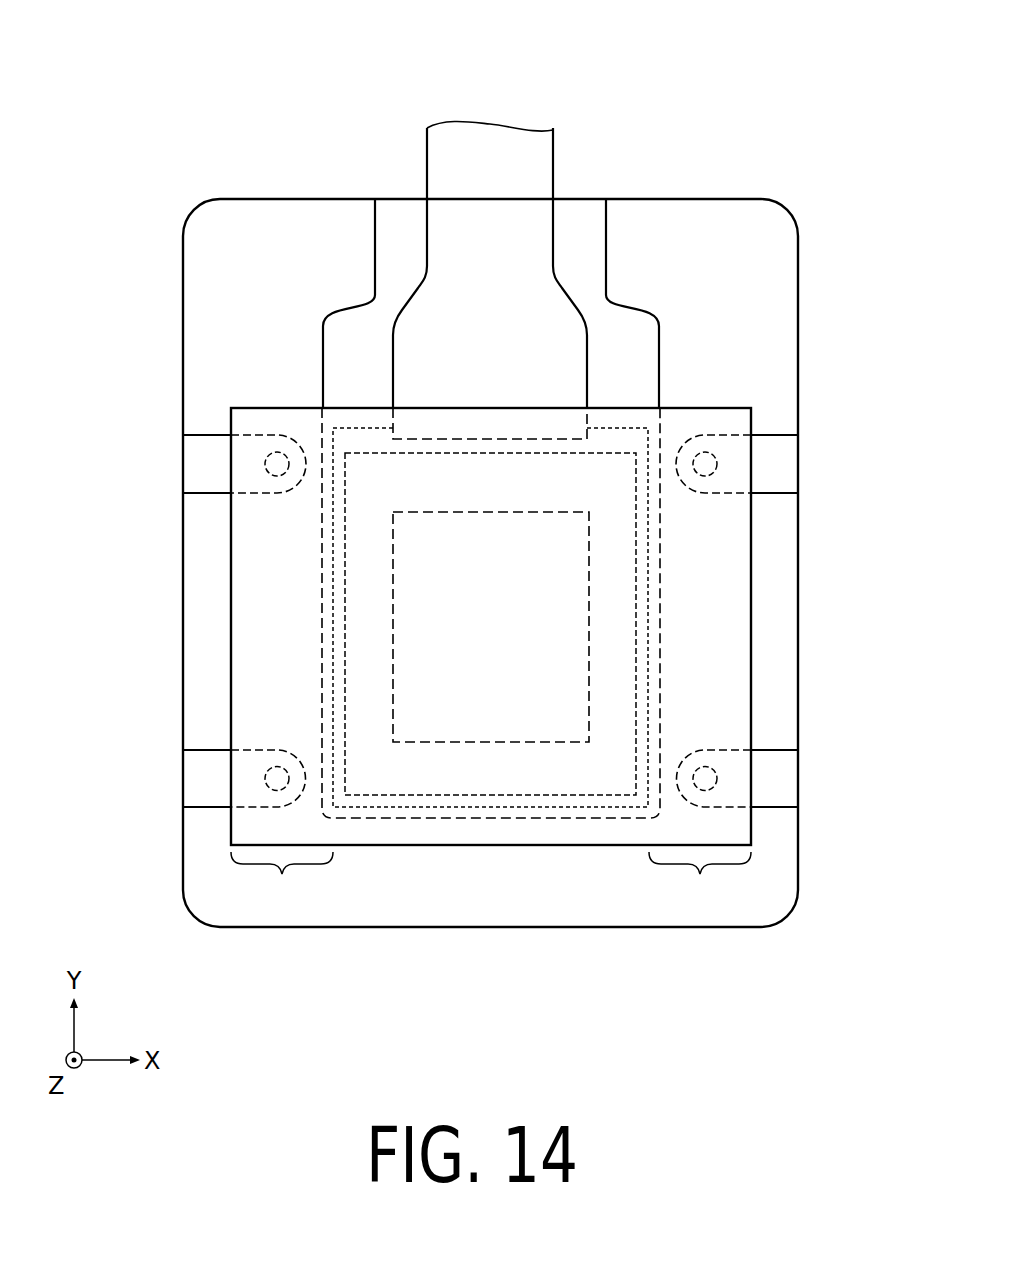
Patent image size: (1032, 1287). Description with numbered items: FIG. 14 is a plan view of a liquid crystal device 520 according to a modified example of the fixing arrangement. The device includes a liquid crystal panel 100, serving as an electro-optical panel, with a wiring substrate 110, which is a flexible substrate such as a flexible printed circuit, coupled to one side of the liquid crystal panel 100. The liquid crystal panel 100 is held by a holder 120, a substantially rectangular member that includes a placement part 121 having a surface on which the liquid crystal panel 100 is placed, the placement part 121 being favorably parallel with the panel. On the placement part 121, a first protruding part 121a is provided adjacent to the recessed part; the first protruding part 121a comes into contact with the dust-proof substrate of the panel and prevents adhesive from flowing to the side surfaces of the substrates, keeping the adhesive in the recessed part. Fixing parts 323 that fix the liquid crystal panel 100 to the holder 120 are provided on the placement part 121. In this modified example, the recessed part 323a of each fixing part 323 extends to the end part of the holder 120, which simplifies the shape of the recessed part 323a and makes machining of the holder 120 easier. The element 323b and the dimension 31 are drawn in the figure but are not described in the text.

The liquid crystal device 520 is at (868, 79).
The wiring substrate 110 is at (553, 152).
The liquid crystal panel 100 is at (751, 559).
The holder 120 is at (798, 662).
The placement part 121 is at (283, 648).
The first protruding part 121a is at (314, 471).
The fixing part 323 is at (214, 494).
The recessed part 323a is at (248, 493).
The hole 323b is at (280, 450).
The width of fixing region 31 is at (491, 883).